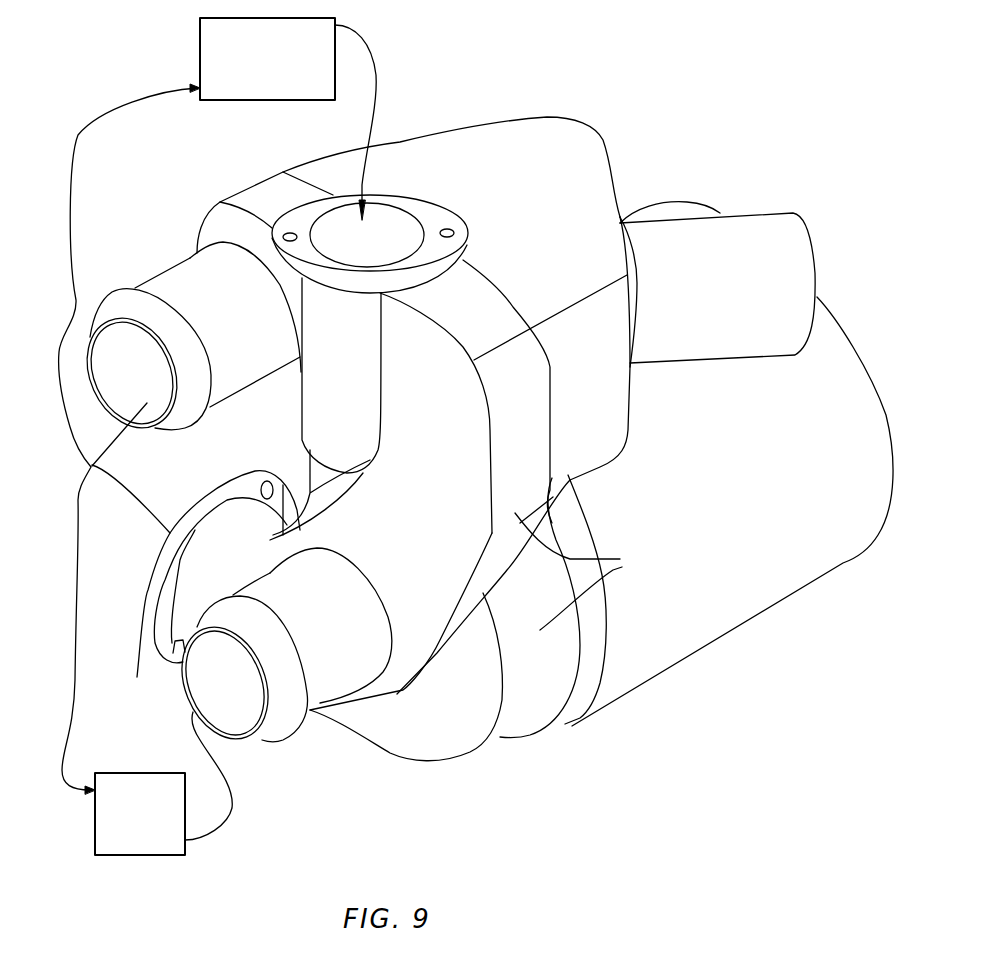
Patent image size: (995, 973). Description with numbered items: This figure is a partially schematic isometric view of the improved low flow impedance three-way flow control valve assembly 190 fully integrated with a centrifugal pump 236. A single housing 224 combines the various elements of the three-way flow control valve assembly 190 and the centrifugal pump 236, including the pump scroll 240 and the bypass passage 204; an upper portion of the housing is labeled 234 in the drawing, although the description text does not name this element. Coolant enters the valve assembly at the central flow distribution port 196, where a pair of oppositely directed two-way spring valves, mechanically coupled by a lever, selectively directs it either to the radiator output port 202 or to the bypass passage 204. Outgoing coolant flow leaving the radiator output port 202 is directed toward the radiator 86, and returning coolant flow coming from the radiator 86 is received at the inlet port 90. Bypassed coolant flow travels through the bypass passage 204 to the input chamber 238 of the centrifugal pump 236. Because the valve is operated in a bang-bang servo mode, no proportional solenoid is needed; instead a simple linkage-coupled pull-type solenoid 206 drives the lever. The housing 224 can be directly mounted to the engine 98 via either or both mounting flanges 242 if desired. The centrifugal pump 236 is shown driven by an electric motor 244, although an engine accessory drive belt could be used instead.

The three-way flow control valve assembly 190 is at (186, 181).
The engine 98 is at (300, 73).
The radiator 86 is at (152, 825).
The upper housing portion 234 is at (608, 169).
The central flow distribution port 196 is at (387, 251).
The mounting flange 242 is at (430, 217).
The bypass passage 204 is at (436, 457).
The radiator output port 202 is at (150, 382).
The inlet port 90 is at (228, 695).
The input chamber 238 is at (397, 702).
The pull-type solenoid 206 is at (737, 305).
The electric motor 244 is at (772, 486).
The housing 224 is at (597, 571).
The pump scroll 240 is at (533, 680).
The centrifugal pump 236 is at (503, 745).